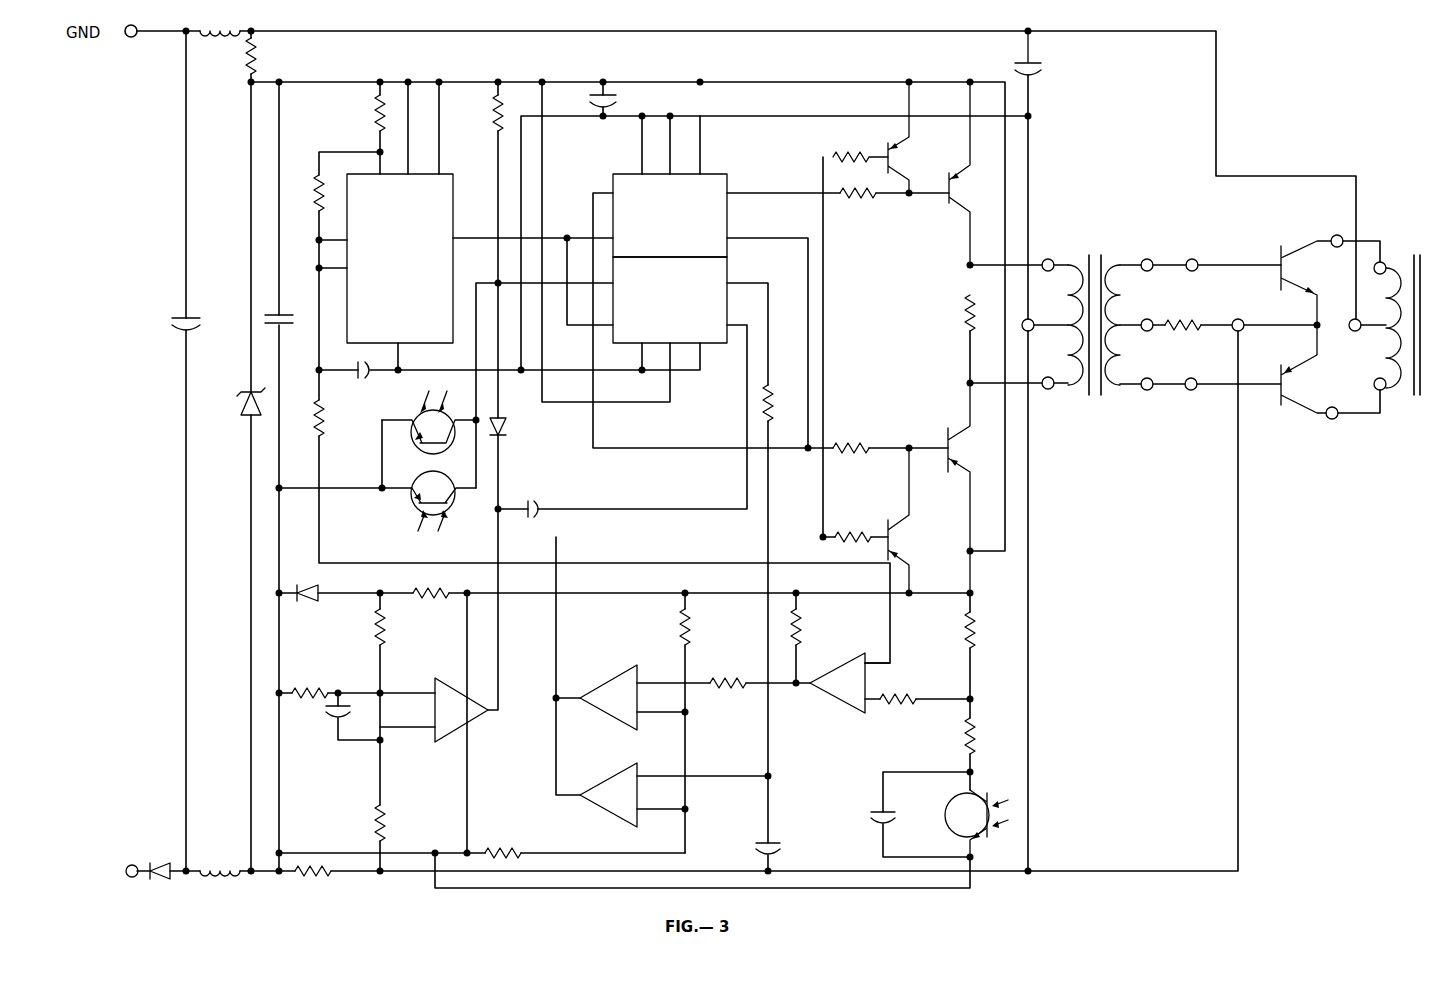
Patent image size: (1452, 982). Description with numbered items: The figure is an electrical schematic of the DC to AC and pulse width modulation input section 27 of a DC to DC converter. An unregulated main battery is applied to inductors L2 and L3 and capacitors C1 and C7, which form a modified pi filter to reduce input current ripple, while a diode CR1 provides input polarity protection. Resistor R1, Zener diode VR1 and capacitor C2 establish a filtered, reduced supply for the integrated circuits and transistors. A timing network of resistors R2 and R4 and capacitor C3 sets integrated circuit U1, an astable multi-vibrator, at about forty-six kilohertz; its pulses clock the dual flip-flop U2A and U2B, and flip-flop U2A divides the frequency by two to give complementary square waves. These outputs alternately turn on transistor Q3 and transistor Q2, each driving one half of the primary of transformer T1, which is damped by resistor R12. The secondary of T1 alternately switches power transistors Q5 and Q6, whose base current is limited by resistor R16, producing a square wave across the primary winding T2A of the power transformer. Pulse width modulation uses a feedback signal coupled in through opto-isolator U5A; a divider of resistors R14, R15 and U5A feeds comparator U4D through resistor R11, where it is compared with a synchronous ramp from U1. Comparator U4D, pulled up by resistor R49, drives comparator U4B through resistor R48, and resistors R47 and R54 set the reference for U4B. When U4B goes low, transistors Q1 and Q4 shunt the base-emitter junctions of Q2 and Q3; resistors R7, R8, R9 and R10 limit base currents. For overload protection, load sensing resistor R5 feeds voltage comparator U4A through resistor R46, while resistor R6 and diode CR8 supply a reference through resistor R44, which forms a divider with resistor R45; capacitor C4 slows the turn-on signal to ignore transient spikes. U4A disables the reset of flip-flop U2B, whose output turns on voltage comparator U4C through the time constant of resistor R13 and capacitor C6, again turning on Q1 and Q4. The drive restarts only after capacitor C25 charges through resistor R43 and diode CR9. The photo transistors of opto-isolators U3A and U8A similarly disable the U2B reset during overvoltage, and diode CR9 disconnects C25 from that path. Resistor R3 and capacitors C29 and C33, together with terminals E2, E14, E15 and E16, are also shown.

The inductor L2 is at (220, 47).
The resistor R1 is at (262, 56).
The resistor R4 is at (367, 113).
The resistor R43 is at (475, 113).
The capacitor C29 is at (620, 101).
The capacitor C7 is at (1036, 53).
The resistor R2 is at (305, 193).
The astable multi-vibrator U1 is at (399, 262).
The flip-flop U2A is at (670, 206).
The flip-flop U2B is at (672, 312).
The capacitor C1 is at (195, 325).
The capacitor C2 is at (286, 310).
The capacitor C3 is at (347, 363).
The Zener diode VR1 is at (227, 401).
The resistor R3 is at (331, 418).
The opto-isolator photo transistor U8A is at (417, 422).
The diode CR9 is at (513, 424).
The opto-isolator photo transistor U3A is at (377, 501).
The capacitor C25 is at (550, 500).
The resistor R7 is at (860, 149).
The transistor Q1 is at (904, 137).
The resistor R8 is at (858, 185).
The transistor Q2 is at (964, 173).
The resistor R12 is at (951, 313).
The transformer T1 is at (1087, 313).
The terminal E14 is at (1186, 253).
The resistor R16 is at (1183, 314).
The terminal E16 is at (1240, 314).
The terminal E15 is at (1191, 374).
The terminal E2 is at (1329, 229).
The power transistor Q5 is at (1306, 283).
The power transistor Q6 is at (1303, 369).
The primary winding of power transformer T2A is at (1376, 338).
The resistor R13 is at (778, 400).
The resistor R9 is at (851, 440).
The transistor Q3 is at (963, 488).
The resistor R10 is at (853, 528).
The transistor Q4 is at (903, 520).
The diode CR8 is at (302, 585).
The resistor R6 is at (430, 583).
The resistor R44 is at (396, 627).
The resistor R45 is at (310, 683).
The capacitor C4 is at (324, 722).
The voltage comparator U4A is at (461, 710).
The resistor R47 is at (704, 627).
The resistor R49 is at (815, 627).
The resistor R48 is at (728, 674).
The comparator U4B is at (608, 697).
The voltage comparator U4C is at (608, 795).
The comparator U4D is at (837, 683).
The resistor R11 is at (898, 690).
The resistor R14 is at (946, 630).
The resistor R15 is at (945, 736).
The capacitor C6 is at (773, 834).
The capacitor C33 is at (866, 808).
The opto-isolator U5A is at (957, 823).
The resistor R46 is at (397, 823).
The resistor R54 is at (502, 844).
The load sensing resistor R5 is at (313, 880).
The inductor L3 is at (219, 892).
The diode CR1 is at (110, 872).
The input section 27 is at (1032, 882).